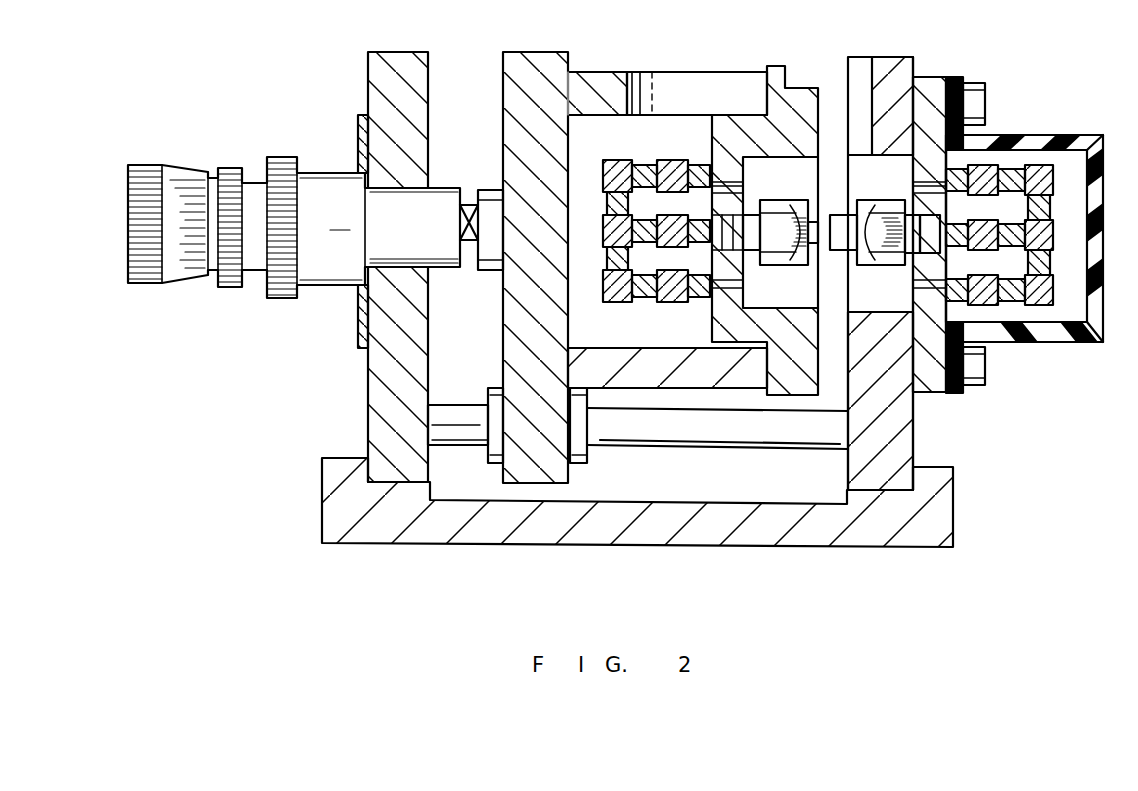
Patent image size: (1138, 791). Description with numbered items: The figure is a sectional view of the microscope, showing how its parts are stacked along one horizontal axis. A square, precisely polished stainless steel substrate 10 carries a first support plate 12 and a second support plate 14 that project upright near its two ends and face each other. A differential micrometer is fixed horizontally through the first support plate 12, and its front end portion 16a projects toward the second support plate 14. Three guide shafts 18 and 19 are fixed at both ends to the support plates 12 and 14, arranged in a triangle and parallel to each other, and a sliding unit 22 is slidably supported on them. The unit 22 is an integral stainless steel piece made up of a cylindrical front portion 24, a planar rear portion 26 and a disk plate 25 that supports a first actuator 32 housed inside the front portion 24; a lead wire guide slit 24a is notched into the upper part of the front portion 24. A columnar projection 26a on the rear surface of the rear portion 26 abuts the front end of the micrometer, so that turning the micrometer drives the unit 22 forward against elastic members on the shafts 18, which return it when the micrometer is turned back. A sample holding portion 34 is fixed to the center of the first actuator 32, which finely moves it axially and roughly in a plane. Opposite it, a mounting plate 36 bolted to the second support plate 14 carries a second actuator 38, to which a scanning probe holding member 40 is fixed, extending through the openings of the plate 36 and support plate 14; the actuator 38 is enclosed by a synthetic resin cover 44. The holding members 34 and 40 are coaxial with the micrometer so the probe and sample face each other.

The substrate 10 is at (953, 522).
The first support plate 12 is at (377, 392).
The second support plate 14 is at (905, 434).
The front end portion 16a is at (465, 210).
The guide shaft 18 is at (466, 256).
The guide shaft 19 is at (458, 415).
The sliding unit 22 is at (596, 90).
The cylindrical front portion 24 is at (671, 362).
The lead wire guide slit 24a is at (698, 86).
The disk plate 25 is at (794, 98).
The planar rear portion 26 is at (533, 65).
The columnar projection 26a is at (492, 197).
The first actuator 32 is at (620, 298).
The sample holding portion 34 is at (783, 263).
The mounting plate 36 is at (930, 90).
The second actuator 38 is at (1055, 234).
The scanning probe holding member 40 is at (881, 262).
The synthetic resin cover 44 is at (1083, 344).